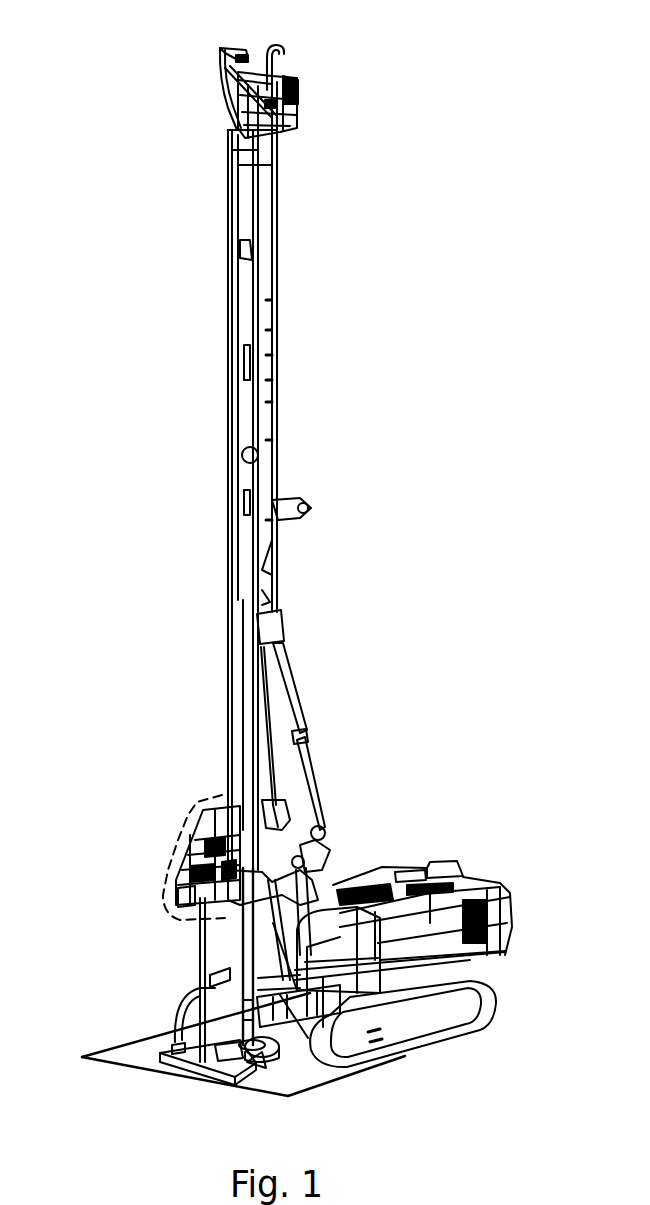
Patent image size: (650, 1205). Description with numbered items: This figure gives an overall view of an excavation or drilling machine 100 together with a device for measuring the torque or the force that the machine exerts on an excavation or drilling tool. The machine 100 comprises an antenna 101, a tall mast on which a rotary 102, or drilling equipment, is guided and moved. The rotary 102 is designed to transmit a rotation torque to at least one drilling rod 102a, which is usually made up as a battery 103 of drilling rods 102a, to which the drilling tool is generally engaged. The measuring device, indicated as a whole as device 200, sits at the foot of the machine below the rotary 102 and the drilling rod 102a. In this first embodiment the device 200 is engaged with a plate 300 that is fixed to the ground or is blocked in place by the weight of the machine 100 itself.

The excavation or drilling machine 100 is at (428, 826).
The antenna 101 is at (209, 445).
The rotary 102 is at (171, 841).
The drilling rod 102a is at (200, 975).
The battery of drilling rods 103 is at (207, 962).
The measuring device 200 is at (178, 1035).
The plate 300 is at (125, 1046).